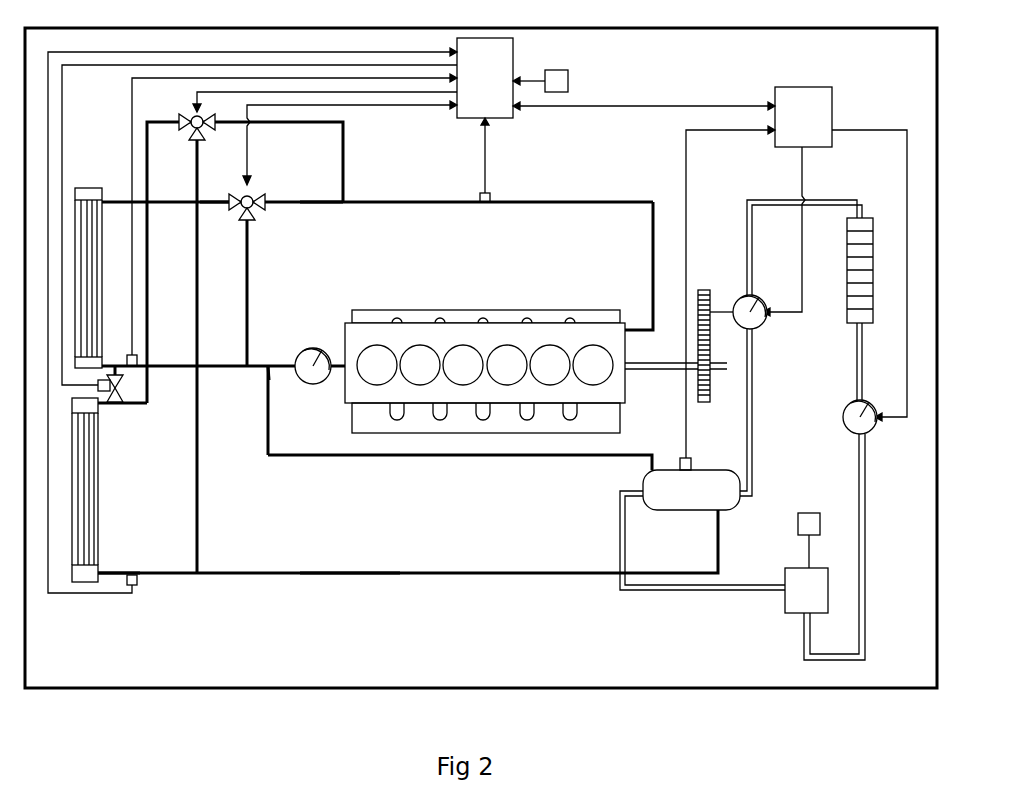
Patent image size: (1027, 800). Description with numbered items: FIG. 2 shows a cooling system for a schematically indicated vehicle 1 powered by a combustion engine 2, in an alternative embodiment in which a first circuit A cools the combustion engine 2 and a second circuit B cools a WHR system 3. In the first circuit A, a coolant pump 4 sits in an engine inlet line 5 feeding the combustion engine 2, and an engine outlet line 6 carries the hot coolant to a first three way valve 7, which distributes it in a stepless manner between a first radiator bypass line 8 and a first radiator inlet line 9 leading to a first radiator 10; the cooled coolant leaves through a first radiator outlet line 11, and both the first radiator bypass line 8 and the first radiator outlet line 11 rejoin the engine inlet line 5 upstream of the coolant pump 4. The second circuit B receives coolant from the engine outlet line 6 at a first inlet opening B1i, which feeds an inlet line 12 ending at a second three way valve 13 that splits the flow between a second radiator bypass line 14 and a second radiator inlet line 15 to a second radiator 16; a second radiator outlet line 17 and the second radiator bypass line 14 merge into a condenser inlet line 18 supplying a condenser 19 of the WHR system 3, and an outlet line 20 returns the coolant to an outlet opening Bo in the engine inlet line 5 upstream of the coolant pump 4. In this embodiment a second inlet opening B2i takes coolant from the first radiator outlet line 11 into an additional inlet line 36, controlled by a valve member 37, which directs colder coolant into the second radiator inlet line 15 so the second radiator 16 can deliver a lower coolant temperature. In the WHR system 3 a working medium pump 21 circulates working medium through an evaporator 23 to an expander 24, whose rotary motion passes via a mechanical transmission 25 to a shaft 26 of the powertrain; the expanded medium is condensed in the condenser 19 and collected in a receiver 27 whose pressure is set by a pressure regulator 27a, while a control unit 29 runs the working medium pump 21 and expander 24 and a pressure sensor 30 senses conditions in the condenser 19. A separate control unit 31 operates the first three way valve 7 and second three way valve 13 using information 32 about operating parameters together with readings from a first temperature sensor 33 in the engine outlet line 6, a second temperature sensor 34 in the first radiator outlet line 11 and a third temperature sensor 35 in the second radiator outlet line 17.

The vehicle 1 is at (99, 109).
The combustion engine 2 is at (513, 313).
The WHR system 3 is at (866, 504).
The coolant pump 4 is at (311, 361).
The engine inlet line 5 is at (287, 360).
The engine outlet line 6 is at (412, 207).
The first three way valve 7 is at (253, 195).
The first radiator bypass line 8 is at (249, 281).
The first radiator inlet line 9 is at (207, 206).
The first radiator 10 is at (92, 218).
The first radiator outlet line 11 is at (177, 363).
The inlet line 12 is at (345, 155).
The second three way valve 13 is at (190, 117).
The second radiator bypass line 14 is at (198, 165).
The second radiator inlet line 15 is at (148, 165).
The second radiator 16 is at (82, 502).
The second radiator outlet line 17 is at (118, 571).
The condenser inlet line 18 is at (233, 576).
The condenser 19 is at (705, 490).
The outlet line 20 is at (500, 458).
The working medium pump 21 is at (863, 421).
The evaporator 23 is at (863, 277).
The expander 24 is at (753, 318).
The mechanical transmission 25 is at (709, 289).
The shaft 26 is at (653, 370).
The receiver 27 is at (805, 607).
The pressure regulator 27a is at (810, 518).
The control unit 29 is at (822, 112).
The pressure sensor 30 is at (692, 462).
The control unit 31 is at (478, 98).
The information 32 is at (568, 80).
The first temperature sensor 33 is at (493, 195).
The second temperature sensor 34 is at (134, 354).
The third temperature sensor 35 is at (129, 584).
The additional inlet line 36 is at (119, 399).
The valve member 37 is at (121, 392).
The first circuit A is at (603, 207).
The second circuit B is at (338, 577).
The first inlet opening B1i is at (347, 206).
The second inlet opening B2i is at (117, 343).
The outlet opening Bo is at (272, 372).